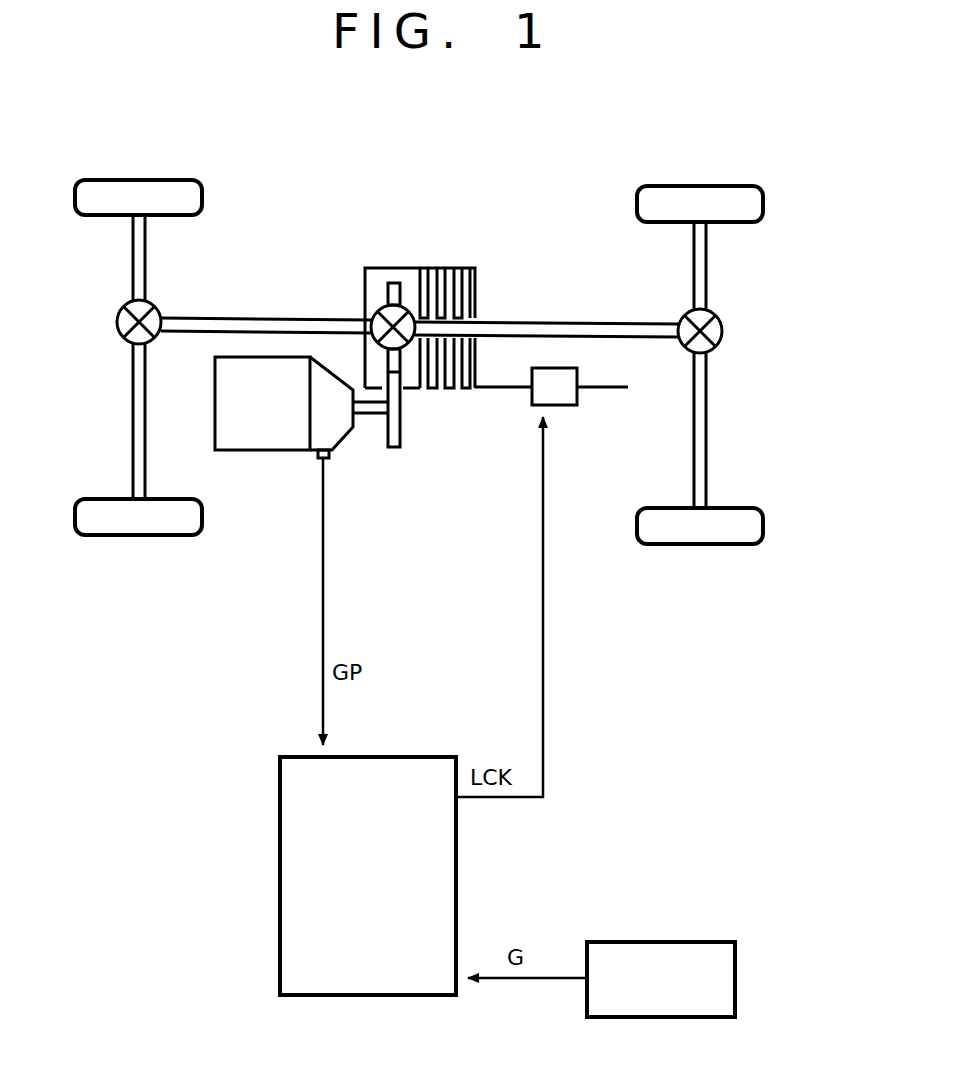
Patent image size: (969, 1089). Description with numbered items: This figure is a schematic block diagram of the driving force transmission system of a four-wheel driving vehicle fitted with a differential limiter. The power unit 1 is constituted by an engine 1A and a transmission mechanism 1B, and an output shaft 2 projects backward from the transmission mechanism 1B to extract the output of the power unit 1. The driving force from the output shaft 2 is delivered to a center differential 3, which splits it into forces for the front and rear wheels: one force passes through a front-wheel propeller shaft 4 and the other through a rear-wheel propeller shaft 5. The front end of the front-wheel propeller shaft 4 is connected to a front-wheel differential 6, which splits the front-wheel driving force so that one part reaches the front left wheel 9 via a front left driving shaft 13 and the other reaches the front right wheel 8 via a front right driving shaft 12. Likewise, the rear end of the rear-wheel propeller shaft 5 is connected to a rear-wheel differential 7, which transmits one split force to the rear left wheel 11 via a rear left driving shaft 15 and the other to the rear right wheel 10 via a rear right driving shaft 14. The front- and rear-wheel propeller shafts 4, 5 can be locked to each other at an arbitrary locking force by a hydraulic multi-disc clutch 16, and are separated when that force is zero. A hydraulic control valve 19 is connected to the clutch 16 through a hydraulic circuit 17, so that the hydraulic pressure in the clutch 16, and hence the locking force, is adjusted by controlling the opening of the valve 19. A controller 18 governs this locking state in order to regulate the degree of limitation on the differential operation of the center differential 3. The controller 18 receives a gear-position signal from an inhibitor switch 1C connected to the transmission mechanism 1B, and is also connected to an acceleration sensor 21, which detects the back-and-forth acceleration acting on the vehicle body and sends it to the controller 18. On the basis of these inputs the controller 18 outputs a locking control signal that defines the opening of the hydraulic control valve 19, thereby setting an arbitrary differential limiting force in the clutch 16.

The power unit 1 is at (293, 391).
The engine 1A is at (265, 430).
The transmission mechanism 1B is at (328, 398).
The inhibitor switch 1C is at (332, 449).
The output shaft 2 is at (372, 410).
The center differential 3 is at (405, 300).
The front-wheel propeller shaft 4 is at (243, 322).
The rear-wheel propeller shaft 5 is at (562, 325).
The front-wheel differential 6 is at (116, 327).
The rear-wheel differential 7 is at (724, 336).
The front right wheel 8 is at (102, 190).
The front left wheel 9 is at (85, 510).
The rear right wheel 10 is at (712, 192).
The rear left wheel 11 is at (657, 509).
The front right driving shaft 12 is at (139, 262).
The front left driving shaft 13 is at (137, 393).
The rear right driving shaft 14 is at (703, 292).
The rear left driving shaft 15 is at (697, 424).
The hydraulic multi-disc clutch 16 is at (494, 264).
The hydraulic circuit 17 is at (612, 386).
The controller 18 is at (382, 890).
The hydraulic control valve 19 is at (565, 405).
The acceleration sensor 21 is at (730, 910).